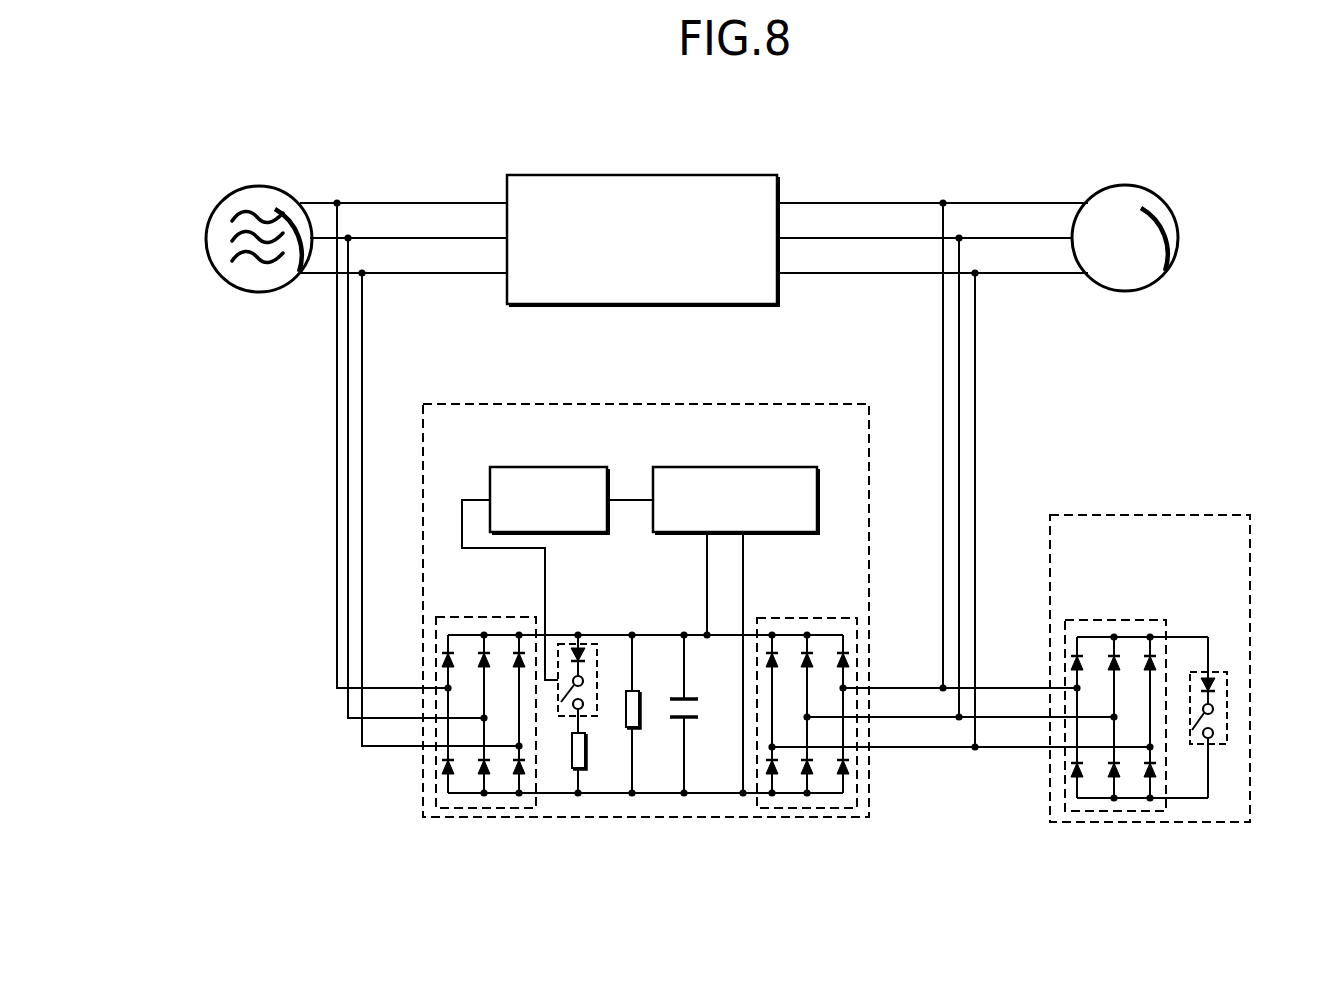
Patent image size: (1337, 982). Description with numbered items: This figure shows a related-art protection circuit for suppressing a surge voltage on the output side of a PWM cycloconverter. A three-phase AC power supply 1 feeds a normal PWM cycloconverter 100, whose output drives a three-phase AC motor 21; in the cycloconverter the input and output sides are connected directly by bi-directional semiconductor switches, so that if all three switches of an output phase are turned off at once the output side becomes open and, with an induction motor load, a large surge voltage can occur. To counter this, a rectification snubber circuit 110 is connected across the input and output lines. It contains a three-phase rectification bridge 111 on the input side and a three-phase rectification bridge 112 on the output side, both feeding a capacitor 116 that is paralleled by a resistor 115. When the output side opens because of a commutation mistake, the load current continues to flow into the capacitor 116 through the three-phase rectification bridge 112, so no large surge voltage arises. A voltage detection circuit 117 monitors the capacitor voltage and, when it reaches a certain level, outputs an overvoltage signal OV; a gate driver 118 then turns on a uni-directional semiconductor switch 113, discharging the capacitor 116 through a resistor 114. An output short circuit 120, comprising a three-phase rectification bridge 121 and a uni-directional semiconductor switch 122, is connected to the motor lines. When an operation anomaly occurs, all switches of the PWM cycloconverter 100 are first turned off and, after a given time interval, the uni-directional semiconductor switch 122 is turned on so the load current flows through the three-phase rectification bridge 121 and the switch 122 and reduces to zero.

The three-phase AC power supply 1 is at (253, 186).
The PWM cycloconverter 100 is at (625, 175).
The three-phase AC motor 21 is at (1125, 185).
The rectification snubber circuit 110 is at (823, 404).
The three-phase rectification bridge 111 is at (462, 617).
The three-phase rectification bridge 112 is at (850, 617).
The uni-directional semiconductor switch 113 is at (558, 700).
The resistor 114 is at (587, 750).
The resistor 115 is at (640, 715).
The capacitor 116 is at (700, 713).
The voltage detection circuit 117 is at (732, 467).
The gate driver 118 is at (545, 467).
The output short circuit 120 is at (1216, 515).
The three-phase rectification bridge 121 is at (1115, 620).
The uni-directional semiconductor switch 122 is at (1228, 720).